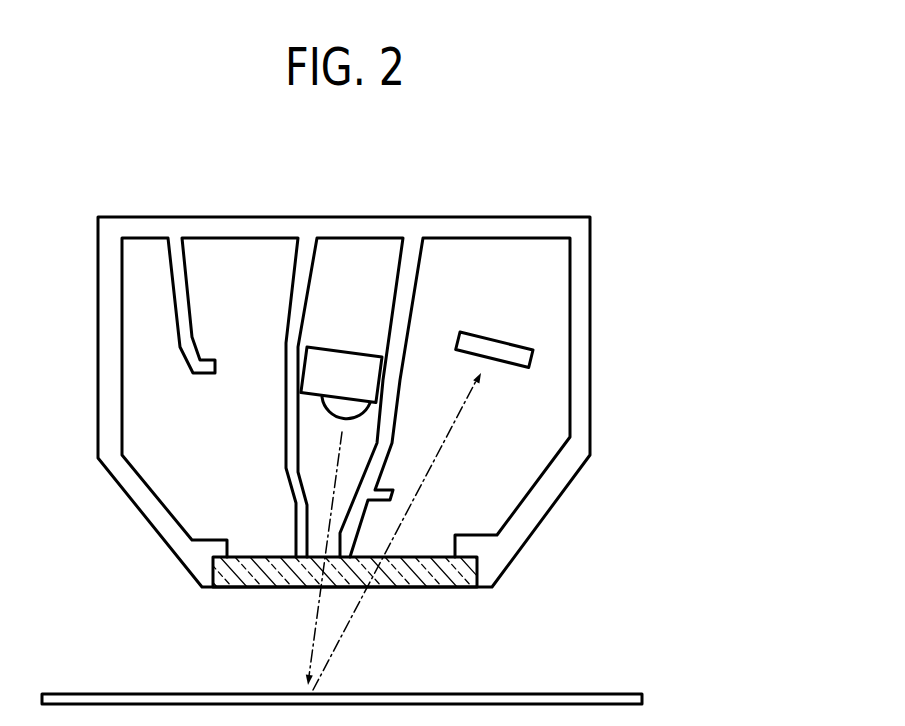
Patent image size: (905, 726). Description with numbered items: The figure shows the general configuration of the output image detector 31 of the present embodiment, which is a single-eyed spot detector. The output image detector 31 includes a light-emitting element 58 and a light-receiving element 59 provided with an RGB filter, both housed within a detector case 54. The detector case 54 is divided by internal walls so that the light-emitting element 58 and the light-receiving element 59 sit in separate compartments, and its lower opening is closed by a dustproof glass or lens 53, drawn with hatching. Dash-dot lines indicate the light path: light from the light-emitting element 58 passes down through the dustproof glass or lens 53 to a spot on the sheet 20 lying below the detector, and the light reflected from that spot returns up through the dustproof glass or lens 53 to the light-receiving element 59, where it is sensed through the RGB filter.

The output image detector 31 is at (526, 184).
The detector case 54 is at (98, 338).
The dustproof glass or lens 53 is at (440, 582).
The light-emitting element 58 is at (347, 350).
The light-receiving element 59 is at (497, 338).
The recording sheet / conveyed medium 20 is at (563, 693).